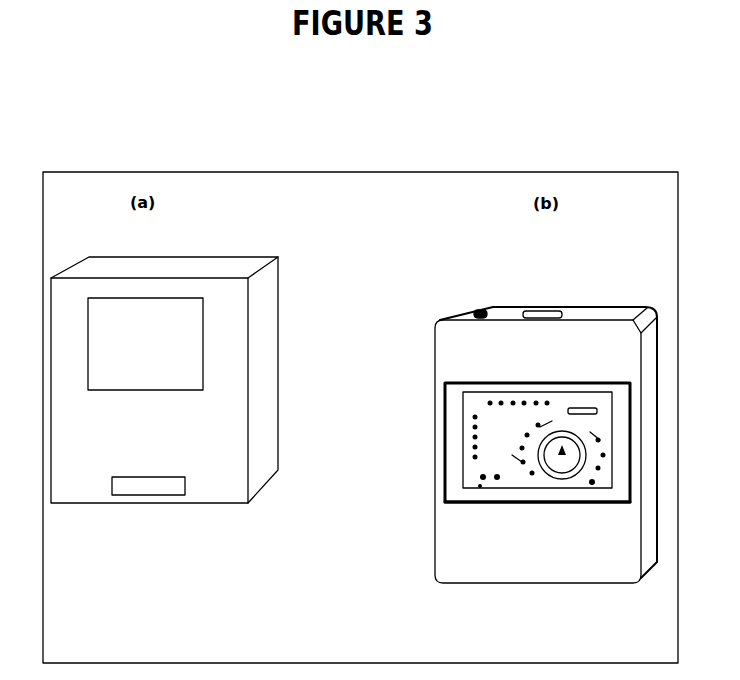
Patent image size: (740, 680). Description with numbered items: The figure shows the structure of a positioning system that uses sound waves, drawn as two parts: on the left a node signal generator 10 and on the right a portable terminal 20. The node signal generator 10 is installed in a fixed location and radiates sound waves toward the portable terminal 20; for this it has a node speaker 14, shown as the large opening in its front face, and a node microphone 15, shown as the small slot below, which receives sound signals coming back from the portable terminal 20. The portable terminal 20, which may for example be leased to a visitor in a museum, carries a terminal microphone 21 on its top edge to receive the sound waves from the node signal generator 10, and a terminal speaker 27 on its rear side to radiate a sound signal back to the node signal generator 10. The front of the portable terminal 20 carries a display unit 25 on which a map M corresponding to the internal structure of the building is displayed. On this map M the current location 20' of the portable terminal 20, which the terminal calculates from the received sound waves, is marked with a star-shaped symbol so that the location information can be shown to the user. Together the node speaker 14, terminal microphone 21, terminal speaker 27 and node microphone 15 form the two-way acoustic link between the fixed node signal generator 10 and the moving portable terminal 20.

The node signal generator 10 is at (281, 507).
The node speaker 14 is at (188, 332).
The node microphone 15 is at (147, 485).
The portable terminal 20 is at (504, 445).
The current location 20' is at (529, 536).
The terminal microphone 21 is at (480, 314).
The display unit 25 is at (620, 495).
The terminal speaker 27 is at (600, 303).
The map M is at (462, 392).